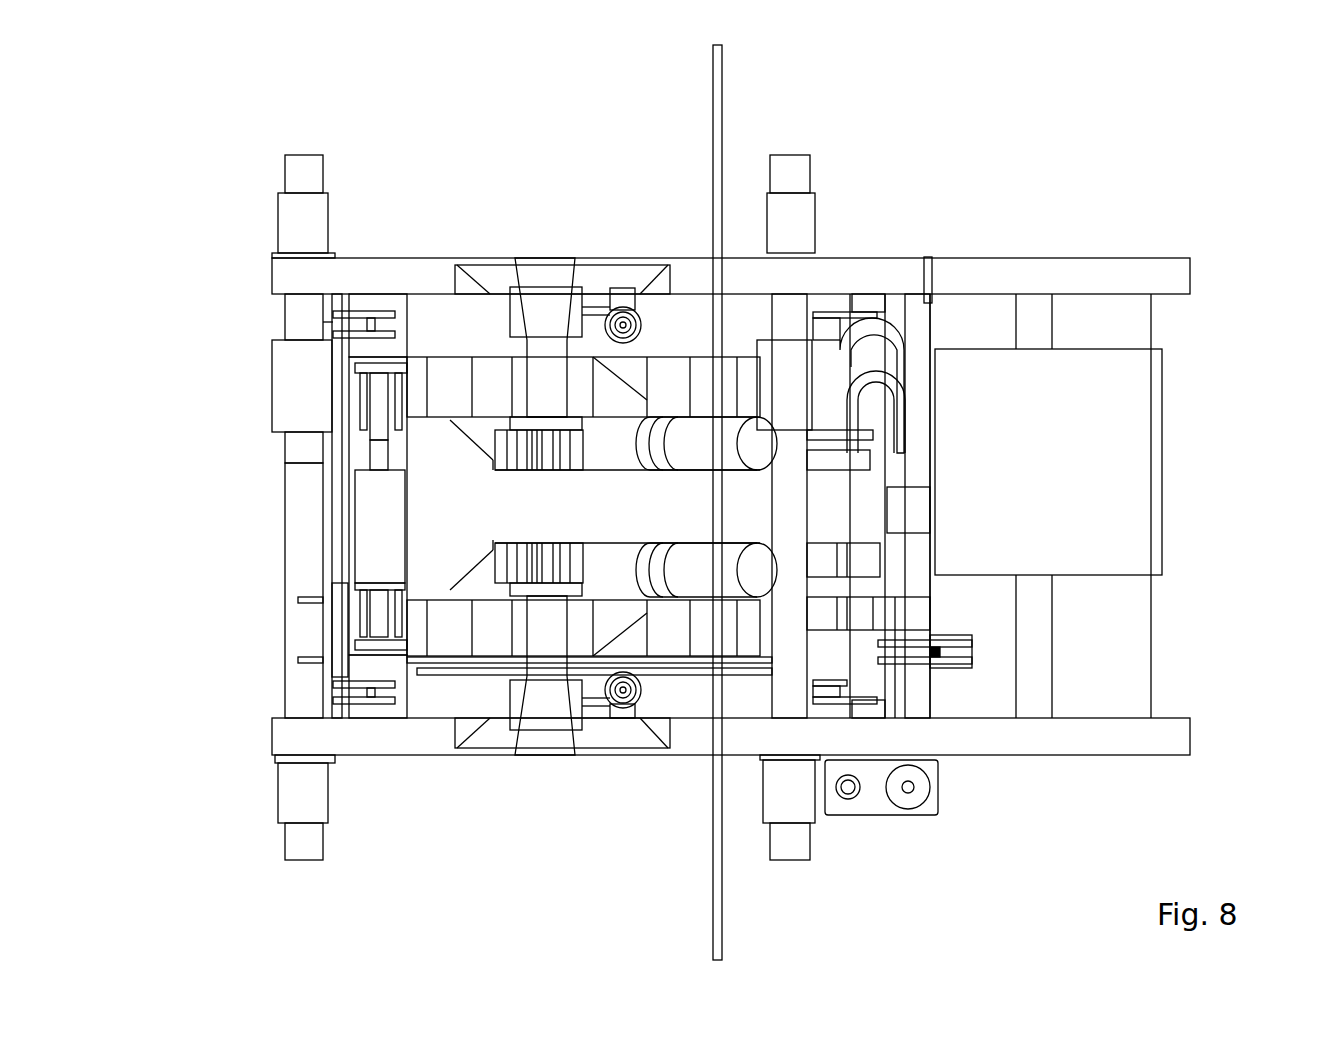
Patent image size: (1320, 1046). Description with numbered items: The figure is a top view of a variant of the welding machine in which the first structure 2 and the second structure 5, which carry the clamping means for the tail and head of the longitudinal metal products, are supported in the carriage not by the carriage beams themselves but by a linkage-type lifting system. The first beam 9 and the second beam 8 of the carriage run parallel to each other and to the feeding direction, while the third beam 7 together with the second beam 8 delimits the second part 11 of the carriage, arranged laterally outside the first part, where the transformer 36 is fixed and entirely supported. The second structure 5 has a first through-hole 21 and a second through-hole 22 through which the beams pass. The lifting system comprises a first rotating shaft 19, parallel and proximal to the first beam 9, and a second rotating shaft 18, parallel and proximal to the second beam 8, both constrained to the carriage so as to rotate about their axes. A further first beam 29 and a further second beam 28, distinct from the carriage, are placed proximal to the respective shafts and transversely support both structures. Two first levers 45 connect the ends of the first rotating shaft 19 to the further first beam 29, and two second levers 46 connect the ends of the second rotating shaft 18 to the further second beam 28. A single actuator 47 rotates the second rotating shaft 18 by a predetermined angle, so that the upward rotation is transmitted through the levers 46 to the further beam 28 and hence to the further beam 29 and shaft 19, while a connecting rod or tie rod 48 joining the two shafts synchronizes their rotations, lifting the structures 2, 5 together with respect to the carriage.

The first structure 2 is at (593, 655).
The second structure 5 is at (613, 425).
The third beam 7 is at (1175, 658).
The second beam 8 is at (920, 330).
The first beam 9 is at (340, 303).
The second part 11 is at (1108, 246).
The second rotating shaft 18 is at (875, 305).
The first rotating shaft 19 is at (392, 300).
The first through-hole 21 is at (300, 437).
The second through-hole 22 is at (788, 345).
The further second beam 28 is at (797, 317).
The further first beam 29 is at (300, 322).
The transformer 36 is at (1130, 502).
The first lever 45 is at (370, 316).
The second lever 46 is at (830, 310).
The actuator 47 is at (948, 665).
The connecting rod or tie rod 48 is at (453, 672).